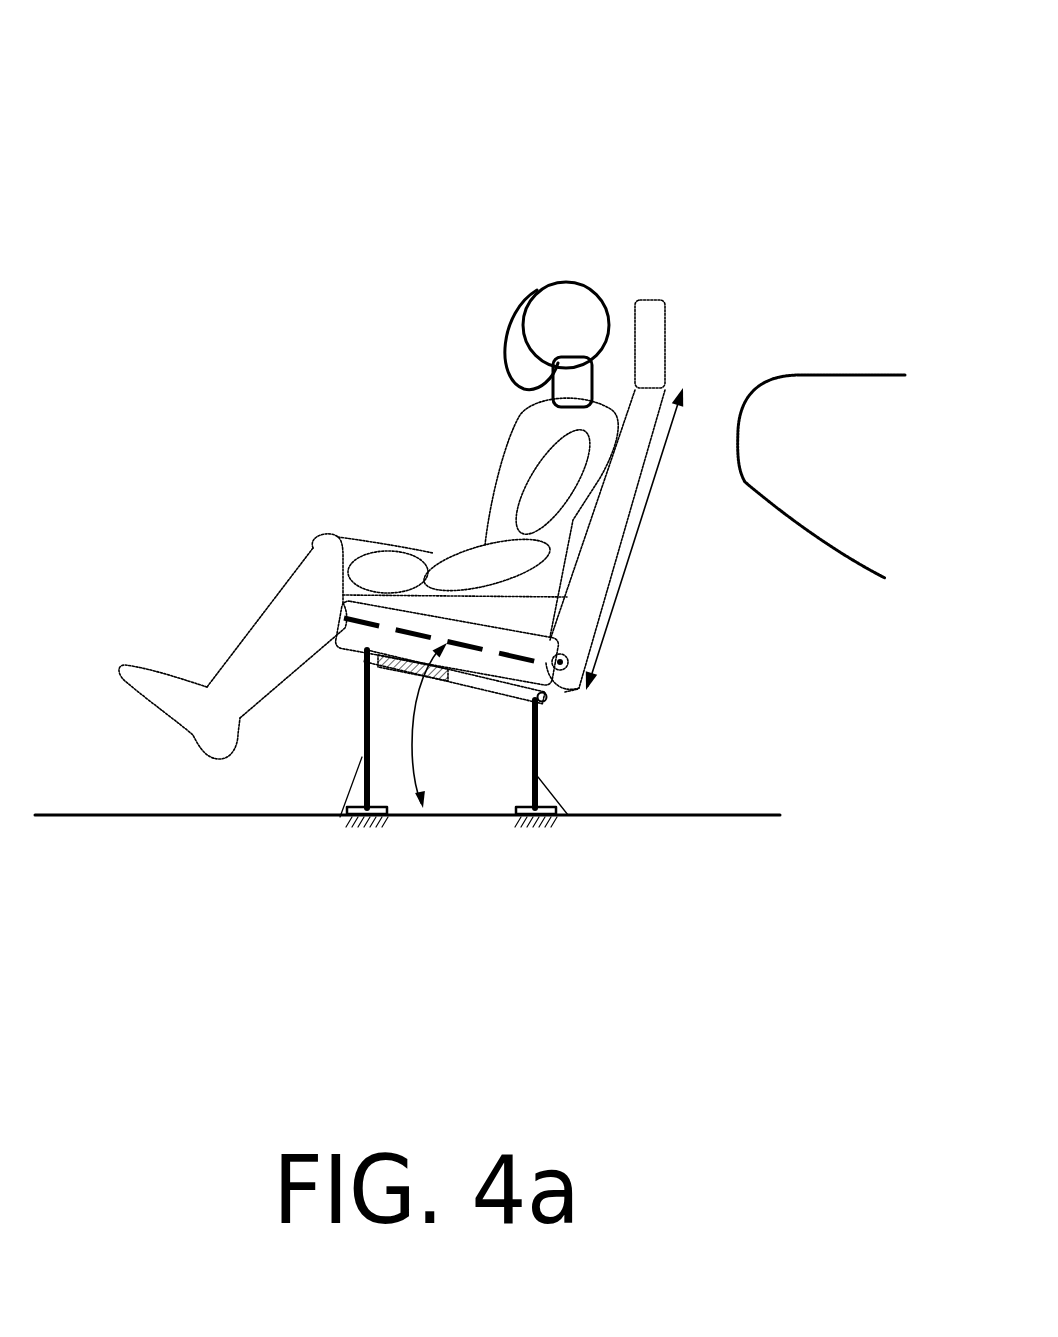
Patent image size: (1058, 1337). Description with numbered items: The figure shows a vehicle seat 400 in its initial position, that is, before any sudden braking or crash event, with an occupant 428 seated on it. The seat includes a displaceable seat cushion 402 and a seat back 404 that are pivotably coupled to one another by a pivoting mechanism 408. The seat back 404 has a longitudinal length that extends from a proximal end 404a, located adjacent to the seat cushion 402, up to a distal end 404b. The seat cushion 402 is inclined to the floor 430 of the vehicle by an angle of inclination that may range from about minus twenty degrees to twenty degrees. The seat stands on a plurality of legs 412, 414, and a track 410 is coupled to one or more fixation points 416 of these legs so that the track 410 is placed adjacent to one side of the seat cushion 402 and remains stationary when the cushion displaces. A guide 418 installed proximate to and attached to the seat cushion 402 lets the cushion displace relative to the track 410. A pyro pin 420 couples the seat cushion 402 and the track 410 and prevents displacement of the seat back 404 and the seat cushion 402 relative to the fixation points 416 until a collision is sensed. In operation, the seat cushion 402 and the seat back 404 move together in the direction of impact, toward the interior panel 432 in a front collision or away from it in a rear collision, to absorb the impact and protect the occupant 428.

The vehicle seat 400 is at (489, 80).
The seat cushion 402 is at (348, 620).
The seat back 404 is at (672, 512).
The proximal end 404a is at (578, 690).
The distal end 404b is at (672, 384).
The pivoting mechanism 408 is at (570, 661).
The track 410 is at (499, 695).
The legs 412 is at (359, 656).
The legs 414 is at (340, 817).
The fixation points 416 is at (568, 815).
The guide 418 is at (453, 682).
The pyro pin 420 is at (546, 701).
The occupant 428 is at (281, 588).
The floor 430 is at (150, 816).
The interior panel 432 is at (763, 497).